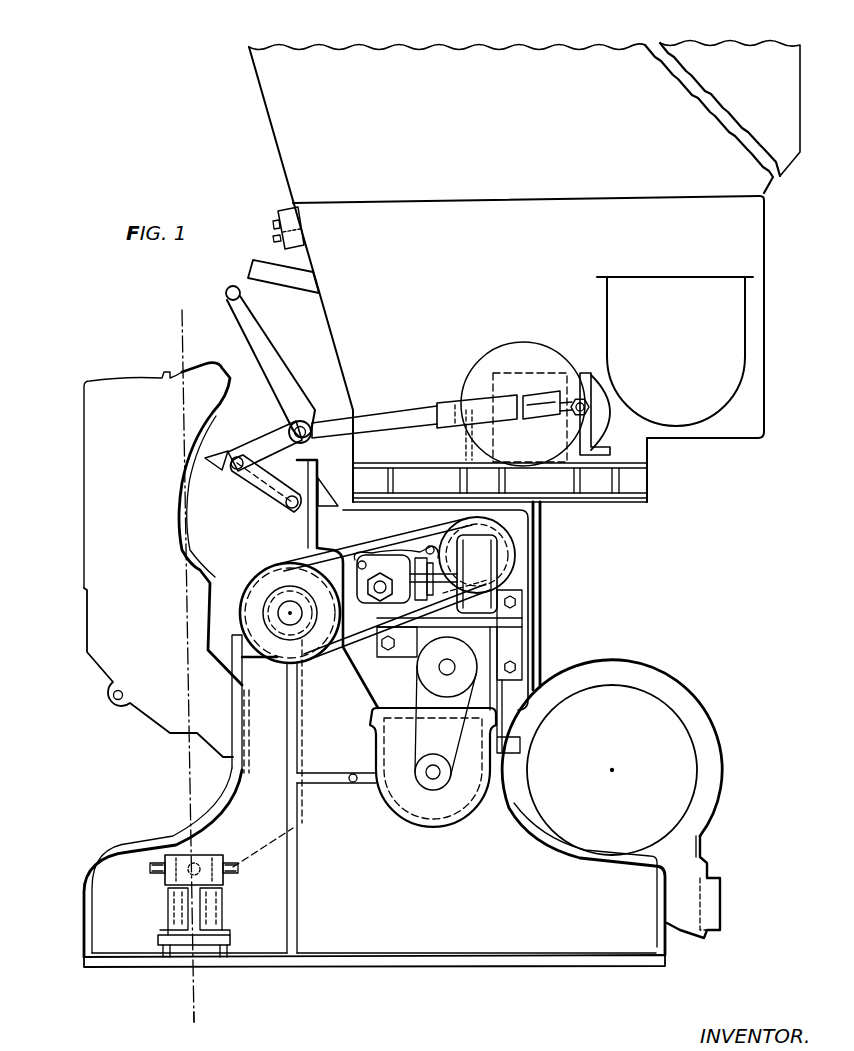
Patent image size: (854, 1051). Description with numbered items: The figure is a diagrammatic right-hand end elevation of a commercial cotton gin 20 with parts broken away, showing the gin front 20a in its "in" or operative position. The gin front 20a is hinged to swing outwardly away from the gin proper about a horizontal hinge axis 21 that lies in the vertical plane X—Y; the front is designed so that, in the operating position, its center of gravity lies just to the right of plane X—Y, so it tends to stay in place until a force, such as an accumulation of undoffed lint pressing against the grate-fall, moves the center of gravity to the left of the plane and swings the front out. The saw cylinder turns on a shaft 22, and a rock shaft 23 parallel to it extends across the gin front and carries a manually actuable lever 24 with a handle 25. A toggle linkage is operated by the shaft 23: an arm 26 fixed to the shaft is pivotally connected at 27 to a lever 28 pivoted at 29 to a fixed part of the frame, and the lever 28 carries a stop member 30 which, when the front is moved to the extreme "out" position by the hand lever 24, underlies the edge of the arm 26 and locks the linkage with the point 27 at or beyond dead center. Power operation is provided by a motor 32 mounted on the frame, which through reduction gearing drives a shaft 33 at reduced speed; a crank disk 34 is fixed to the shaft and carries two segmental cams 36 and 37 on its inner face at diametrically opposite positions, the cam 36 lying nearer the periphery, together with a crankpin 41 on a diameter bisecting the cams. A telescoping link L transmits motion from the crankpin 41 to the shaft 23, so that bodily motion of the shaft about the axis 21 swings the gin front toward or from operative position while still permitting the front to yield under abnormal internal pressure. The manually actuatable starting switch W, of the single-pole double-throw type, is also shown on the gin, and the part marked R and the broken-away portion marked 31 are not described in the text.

The cotton gin 20 is at (554, 592).
The gin front 20a is at (99, 367).
The hinge axis 21 is at (190, 863).
The saw cylinder shaft 22 is at (281, 606).
The rock shaft 23 is at (306, 426).
The manually actuable lever 24 is at (260, 338).
The handle 25 is at (231, 287).
The arm 26 is at (257, 442).
The pivotal connection 27 is at (235, 470).
The lever 28 is at (262, 488).
The pivot 29 is at (290, 506).
The stop member 30 is at (207, 464).
The hopper 31 is at (697, 36).
The motor 32 is at (600, 418).
The shaft 33 is at (527, 386).
The crank disk 34 is at (507, 352).
The segmental cam 36 is at (576, 372).
The segmental cam 37 is at (470, 392).
The crankpin 41 is at (572, 411).
The link L is at (378, 414).
The starting switch W is at (292, 226).
The rod R is at (276, 225).
The vertical plane X—Y X is at (183, 653).
The vertical plane X— Y is at (193, 1031).